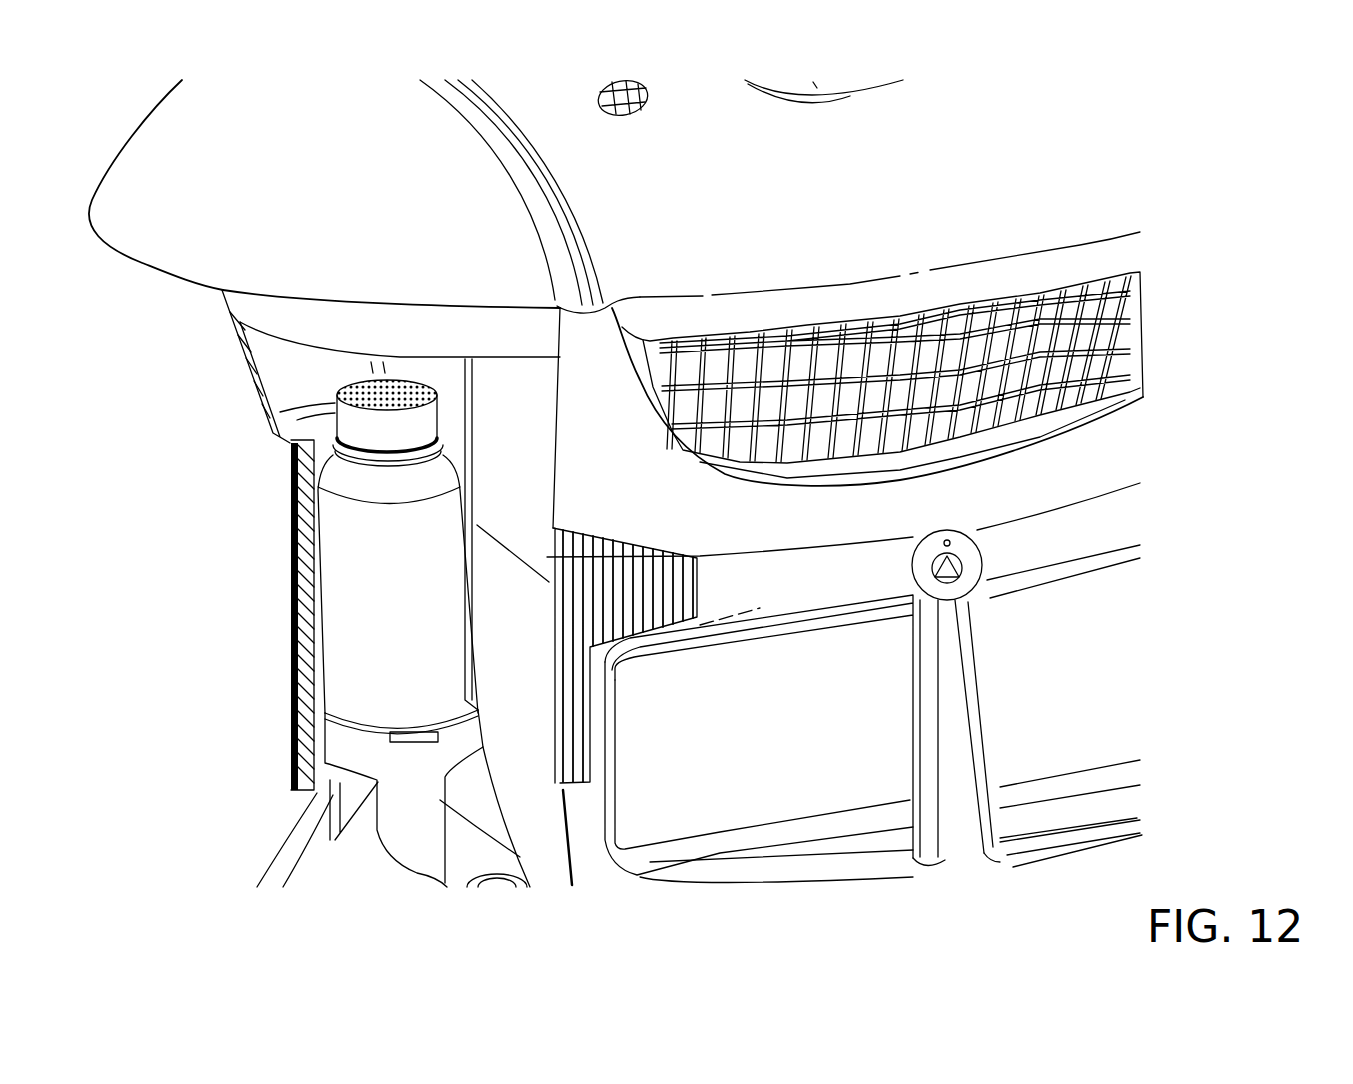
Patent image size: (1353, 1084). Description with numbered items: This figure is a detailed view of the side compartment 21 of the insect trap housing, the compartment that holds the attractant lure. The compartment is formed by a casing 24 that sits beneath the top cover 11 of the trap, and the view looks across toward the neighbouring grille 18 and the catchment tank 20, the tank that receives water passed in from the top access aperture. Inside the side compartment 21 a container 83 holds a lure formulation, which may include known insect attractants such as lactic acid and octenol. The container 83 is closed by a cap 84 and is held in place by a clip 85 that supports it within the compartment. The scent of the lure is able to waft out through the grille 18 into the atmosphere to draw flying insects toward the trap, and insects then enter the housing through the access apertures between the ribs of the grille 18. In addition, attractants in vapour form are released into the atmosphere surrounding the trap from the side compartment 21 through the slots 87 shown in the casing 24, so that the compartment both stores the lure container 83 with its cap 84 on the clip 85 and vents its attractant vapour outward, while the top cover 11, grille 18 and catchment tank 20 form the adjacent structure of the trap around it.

The top cover 11 is at (1080, 138).
The grille 18 is at (1097, 315).
The catchment tank 20 is at (1100, 651).
The casing 24 is at (283, 364).
The side compartment 21 is at (293, 585).
The cap 84 is at (333, 397).
The container 83 is at (357, 543).
The clip 85 is at (397, 818).
The slots 87 is at (583, 620).